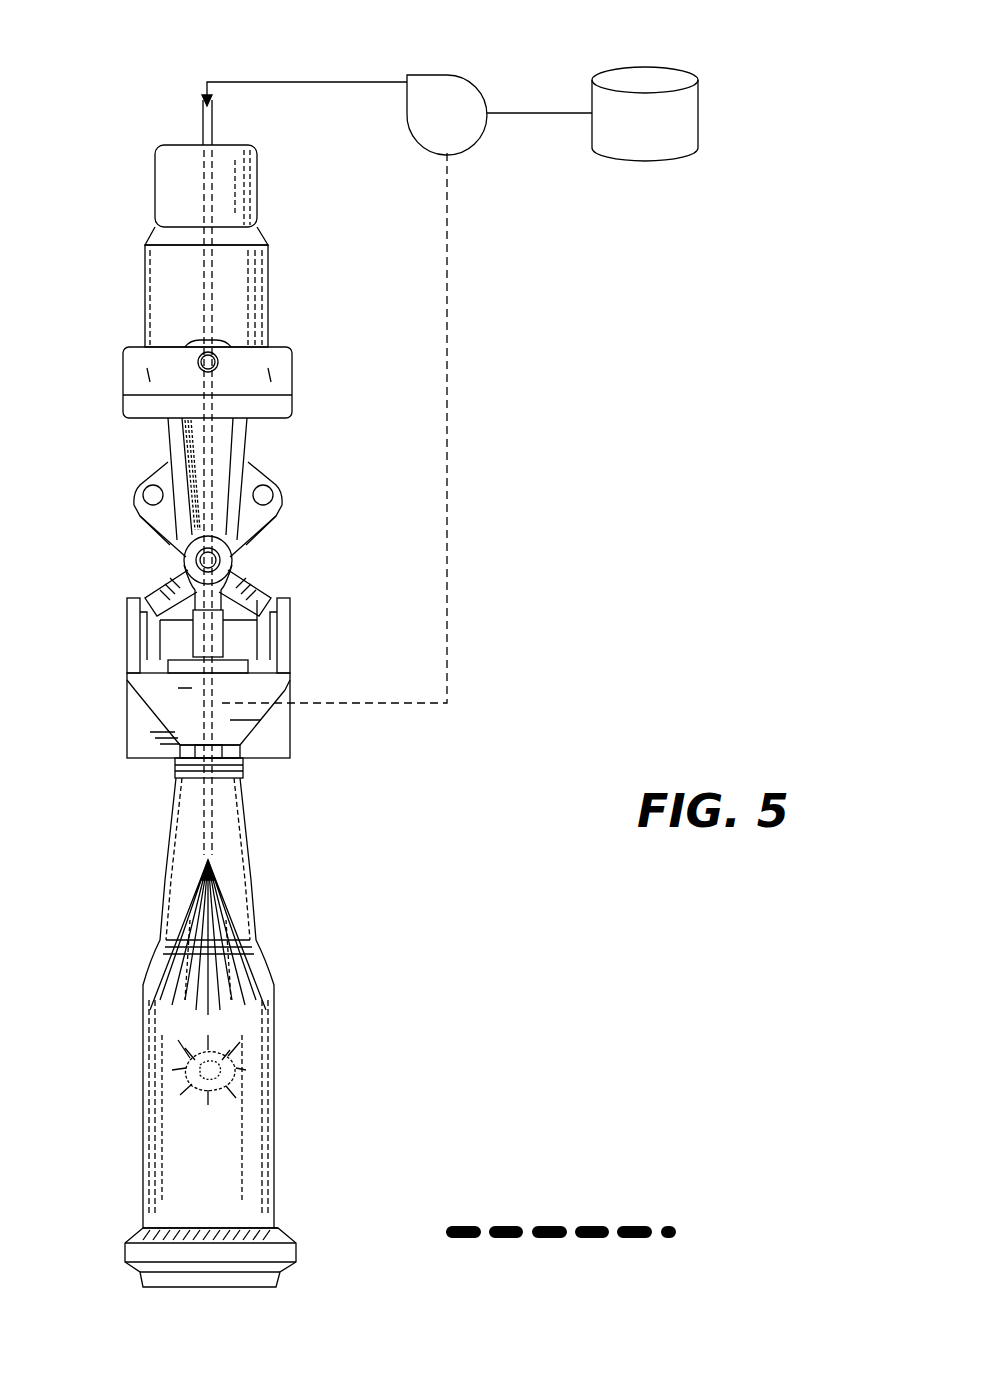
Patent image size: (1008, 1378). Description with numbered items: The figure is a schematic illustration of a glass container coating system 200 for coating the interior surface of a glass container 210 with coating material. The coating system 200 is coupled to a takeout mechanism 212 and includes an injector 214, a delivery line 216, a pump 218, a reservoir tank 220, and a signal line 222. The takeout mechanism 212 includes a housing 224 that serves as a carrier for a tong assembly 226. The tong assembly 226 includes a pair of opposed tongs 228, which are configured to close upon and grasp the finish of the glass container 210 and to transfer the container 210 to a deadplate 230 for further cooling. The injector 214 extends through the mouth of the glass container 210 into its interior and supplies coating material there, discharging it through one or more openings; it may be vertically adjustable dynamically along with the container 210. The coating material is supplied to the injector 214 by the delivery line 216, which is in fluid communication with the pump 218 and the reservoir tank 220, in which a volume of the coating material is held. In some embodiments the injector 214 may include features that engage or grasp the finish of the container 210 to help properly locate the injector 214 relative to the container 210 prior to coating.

The glass container coating system 200 is at (553, 302).
The glass container 210 is at (276, 1065).
The takeout mechanism 212 is at (140, 243).
The injector 214 is at (218, 802).
The delivery line 216 is at (268, 82).
The pump 218 is at (466, 76).
The reservoir tank 220 is at (674, 69).
The signal line 222 is at (452, 580).
The housing 224 is at (123, 375).
The tong assembly 226 is at (145, 505).
The opposed tongs 228 is at (127, 715).
The deadplate 230 is at (550, 1226).